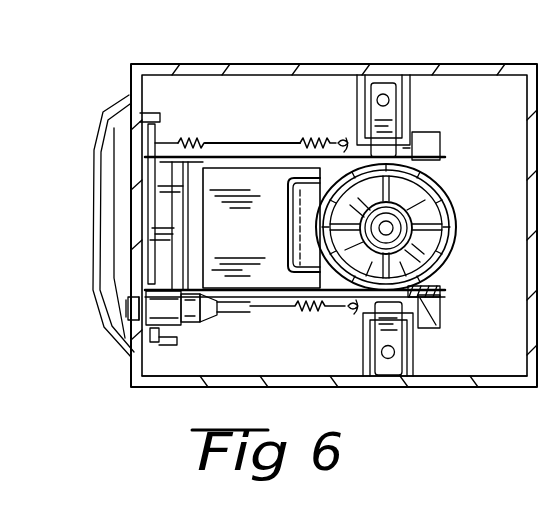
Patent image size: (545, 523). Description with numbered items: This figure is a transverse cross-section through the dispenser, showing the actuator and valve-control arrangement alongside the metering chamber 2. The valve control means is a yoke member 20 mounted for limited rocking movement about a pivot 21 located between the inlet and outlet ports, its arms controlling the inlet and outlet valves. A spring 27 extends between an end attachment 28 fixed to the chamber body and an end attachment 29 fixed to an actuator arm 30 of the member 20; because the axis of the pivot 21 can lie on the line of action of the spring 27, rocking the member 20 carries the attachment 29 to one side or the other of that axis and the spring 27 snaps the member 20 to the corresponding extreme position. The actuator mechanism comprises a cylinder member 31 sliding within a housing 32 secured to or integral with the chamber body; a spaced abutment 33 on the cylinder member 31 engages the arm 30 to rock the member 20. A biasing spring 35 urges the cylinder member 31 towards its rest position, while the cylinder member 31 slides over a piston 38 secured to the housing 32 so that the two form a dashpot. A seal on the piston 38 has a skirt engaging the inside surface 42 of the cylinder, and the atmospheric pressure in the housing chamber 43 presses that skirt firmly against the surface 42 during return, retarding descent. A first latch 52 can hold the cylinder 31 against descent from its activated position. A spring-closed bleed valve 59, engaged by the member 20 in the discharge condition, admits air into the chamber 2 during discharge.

The metering chamber 2 is at (128, 245).
The yoke member 20 is at (249, 146).
The pivot 21 is at (202, 217).
The spring 27 is at (302, 142).
The end attachment 28 is at (157, 136).
The end attachment 29 is at (346, 141).
The actuator arm 30 is at (440, 148).
The cylinder member 31 is at (421, 236).
The housing 32 is at (478, 388).
The abutment 33 is at (452, 200).
The spring 35 is at (440, 290).
The piston 38 is at (450, 262).
The inside surface 42 is at (446, 185).
The housing chamber 43 is at (235, 357).
The first latch 52 is at (390, 113).
The bleed valve 59 is at (126, 309).